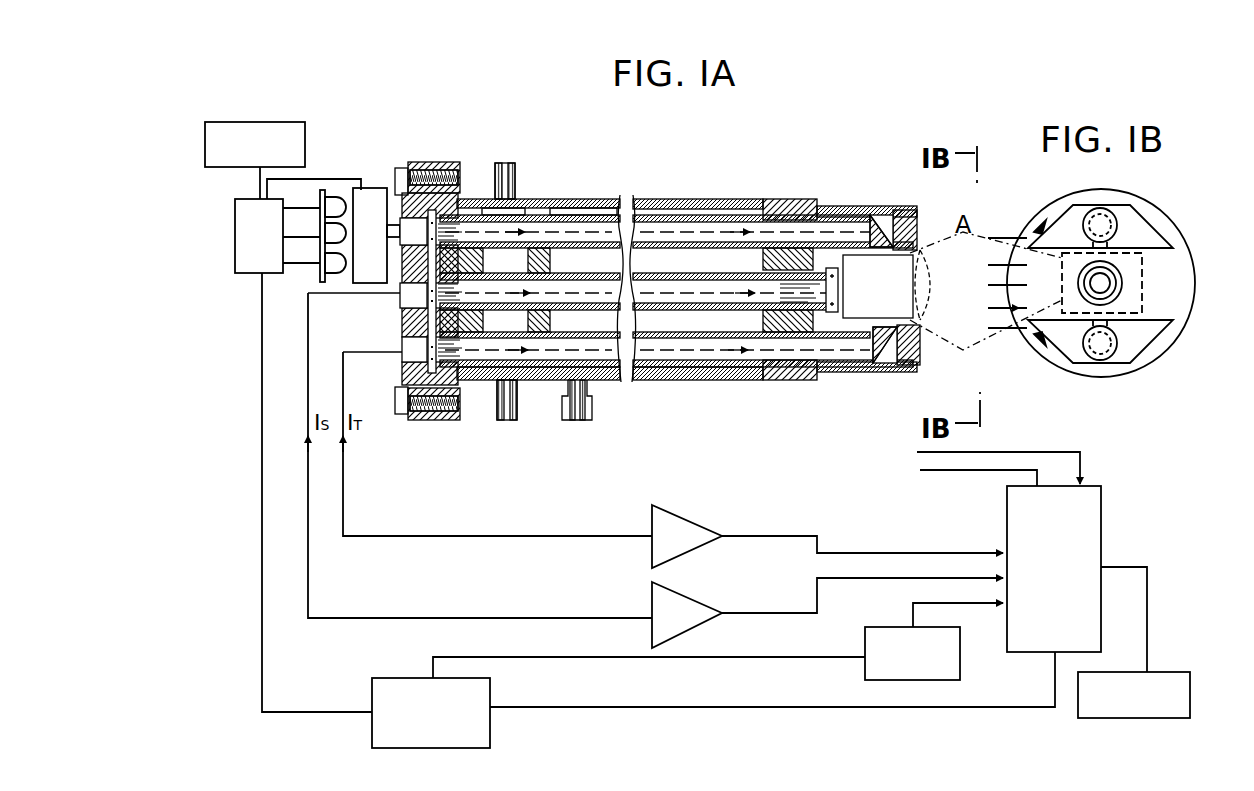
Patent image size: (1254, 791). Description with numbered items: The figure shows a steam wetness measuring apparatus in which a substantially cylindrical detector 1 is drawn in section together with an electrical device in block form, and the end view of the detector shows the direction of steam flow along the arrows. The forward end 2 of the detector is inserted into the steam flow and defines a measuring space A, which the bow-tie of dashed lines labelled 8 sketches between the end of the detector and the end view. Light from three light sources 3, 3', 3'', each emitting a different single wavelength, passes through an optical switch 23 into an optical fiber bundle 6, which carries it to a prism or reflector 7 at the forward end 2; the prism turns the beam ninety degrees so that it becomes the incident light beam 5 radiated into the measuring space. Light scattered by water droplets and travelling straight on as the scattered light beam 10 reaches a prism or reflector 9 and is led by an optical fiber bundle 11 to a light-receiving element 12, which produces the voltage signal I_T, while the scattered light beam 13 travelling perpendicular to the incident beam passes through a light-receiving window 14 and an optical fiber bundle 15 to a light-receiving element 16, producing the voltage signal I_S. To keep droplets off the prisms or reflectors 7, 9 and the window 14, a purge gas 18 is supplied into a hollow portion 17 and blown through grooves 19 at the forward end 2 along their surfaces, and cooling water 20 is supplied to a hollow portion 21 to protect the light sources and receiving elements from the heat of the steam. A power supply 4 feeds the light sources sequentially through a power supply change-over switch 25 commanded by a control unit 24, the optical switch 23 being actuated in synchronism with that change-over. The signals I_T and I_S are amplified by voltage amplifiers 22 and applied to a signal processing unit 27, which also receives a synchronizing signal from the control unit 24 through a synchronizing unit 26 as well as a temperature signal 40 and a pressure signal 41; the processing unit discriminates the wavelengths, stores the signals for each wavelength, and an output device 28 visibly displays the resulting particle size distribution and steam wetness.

The detector 1 is at (583, 200).
The forward end 2 is at (797, 200).
The light source 3 is at (318, 217).
The light source 3' is at (318, 244).
The light source 3'' is at (315, 277).
The power supply 4 is at (305, 137).
The incident light beam 5 is at (921, 253).
The optical fiber bundle 6 is at (661, 224).
The prism or reflector 7 is at (885, 250).
The light beam 8 is at (986, 305).
The prism or reflector 9 is at (882, 364).
The scattered light beam 10 is at (733, 352).
The optical fiber bundle 11 is at (682, 355).
The light-receiving element 12 is at (398, 358).
The scattered light beam 13 is at (733, 284).
The light-receiving window 14 is at (848, 282).
The optical fiber bundle 15 is at (662, 284).
The light-receiving element 16 is at (398, 295).
The hollow portion 17 is at (600, 336).
The purge gas 18 is at (577, 427).
The grooves 19 is at (801, 338).
The cooling water 20 is at (505, 158).
The hollow portion 21 is at (497, 332).
The voltage amplifiers 22 is at (720, 531).
The optical switch 23 is at (376, 188).
The control unit 24 is at (492, 741).
The power supply change-over switch 25 is at (241, 273).
The synchronizing unit 26 is at (960, 672).
The signal processing unit 27 is at (1101, 498).
The output device 28 is at (1180, 672).
The temperature signal 40 is at (1058, 447).
The pressure signal 41 is at (952, 472).